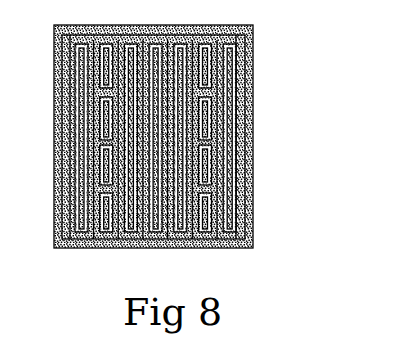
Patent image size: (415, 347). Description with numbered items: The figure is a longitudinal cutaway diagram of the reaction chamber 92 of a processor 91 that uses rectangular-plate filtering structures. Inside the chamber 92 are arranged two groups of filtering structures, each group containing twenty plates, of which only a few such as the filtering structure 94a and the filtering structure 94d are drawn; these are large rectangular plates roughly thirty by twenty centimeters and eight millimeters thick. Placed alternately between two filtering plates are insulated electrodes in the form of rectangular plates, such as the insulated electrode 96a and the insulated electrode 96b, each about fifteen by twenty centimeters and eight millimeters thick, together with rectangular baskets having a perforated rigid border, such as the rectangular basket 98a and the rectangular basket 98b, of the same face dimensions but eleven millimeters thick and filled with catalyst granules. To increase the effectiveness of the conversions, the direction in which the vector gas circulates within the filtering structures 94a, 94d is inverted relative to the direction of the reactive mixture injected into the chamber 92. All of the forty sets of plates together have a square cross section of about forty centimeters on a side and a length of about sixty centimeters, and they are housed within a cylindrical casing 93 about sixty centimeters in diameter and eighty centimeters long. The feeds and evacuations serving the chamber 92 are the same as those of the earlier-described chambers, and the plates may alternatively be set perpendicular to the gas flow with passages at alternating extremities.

The processor 91 is at (281, 282).
The reaction chamber 92 is at (298, 222).
The cylindrical casing 93 is at (253, 72).
The filtering structure 94a is at (80, 212).
The filtering structure 94d is at (240, 166).
The insulated electrode 96a is at (99, 227).
The insulated electrode 96b is at (102, 118).
The rectangular basket 98a is at (102, 157).
The rectangular basket 98b is at (102, 68).